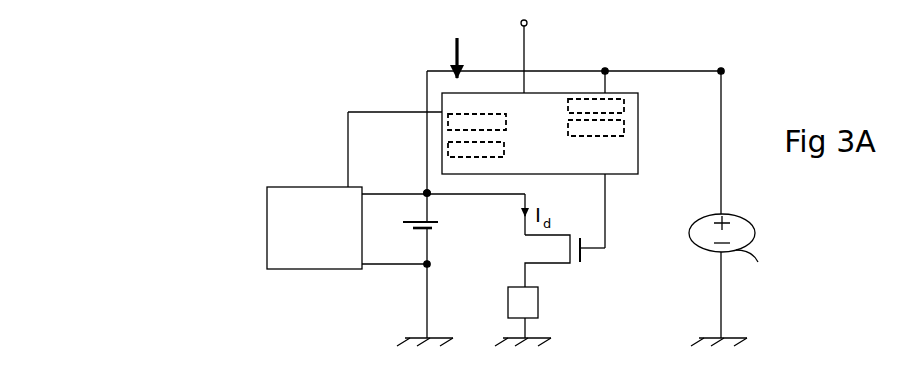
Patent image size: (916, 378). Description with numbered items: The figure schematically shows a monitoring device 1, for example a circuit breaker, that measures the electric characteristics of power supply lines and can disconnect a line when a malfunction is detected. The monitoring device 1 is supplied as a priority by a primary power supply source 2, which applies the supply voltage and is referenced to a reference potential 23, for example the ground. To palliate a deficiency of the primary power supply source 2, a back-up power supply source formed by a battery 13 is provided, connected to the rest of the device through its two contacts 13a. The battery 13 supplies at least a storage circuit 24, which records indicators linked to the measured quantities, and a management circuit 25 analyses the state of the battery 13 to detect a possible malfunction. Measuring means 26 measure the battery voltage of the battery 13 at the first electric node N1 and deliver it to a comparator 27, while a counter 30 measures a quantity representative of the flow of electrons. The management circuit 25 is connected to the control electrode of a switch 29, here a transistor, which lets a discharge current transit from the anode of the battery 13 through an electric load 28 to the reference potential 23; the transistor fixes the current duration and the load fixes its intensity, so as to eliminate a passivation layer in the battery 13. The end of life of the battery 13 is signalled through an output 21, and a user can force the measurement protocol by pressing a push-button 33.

The monitoring device 1 is at (283, 92).
The push-button 33 is at (454, 46).
The output 21 is at (527, 22).
The storage circuit 24 is at (495, 131).
The management circuit 25 is at (495, 158).
The comparator 27 is at (624, 107).
The counter 30 is at (624, 133).
The measuring means 26 is at (302, 220).
The first electric node N1 is at (424, 193).
The back-up power supply source 13 is at (413, 218).
The contacts 13a is at (432, 212).
The switch 29 is at (562, 264).
The electric load 28 is at (538, 302).
The primary power supply source 2 is at (743, 204).
The reference potential 23 is at (413, 338).